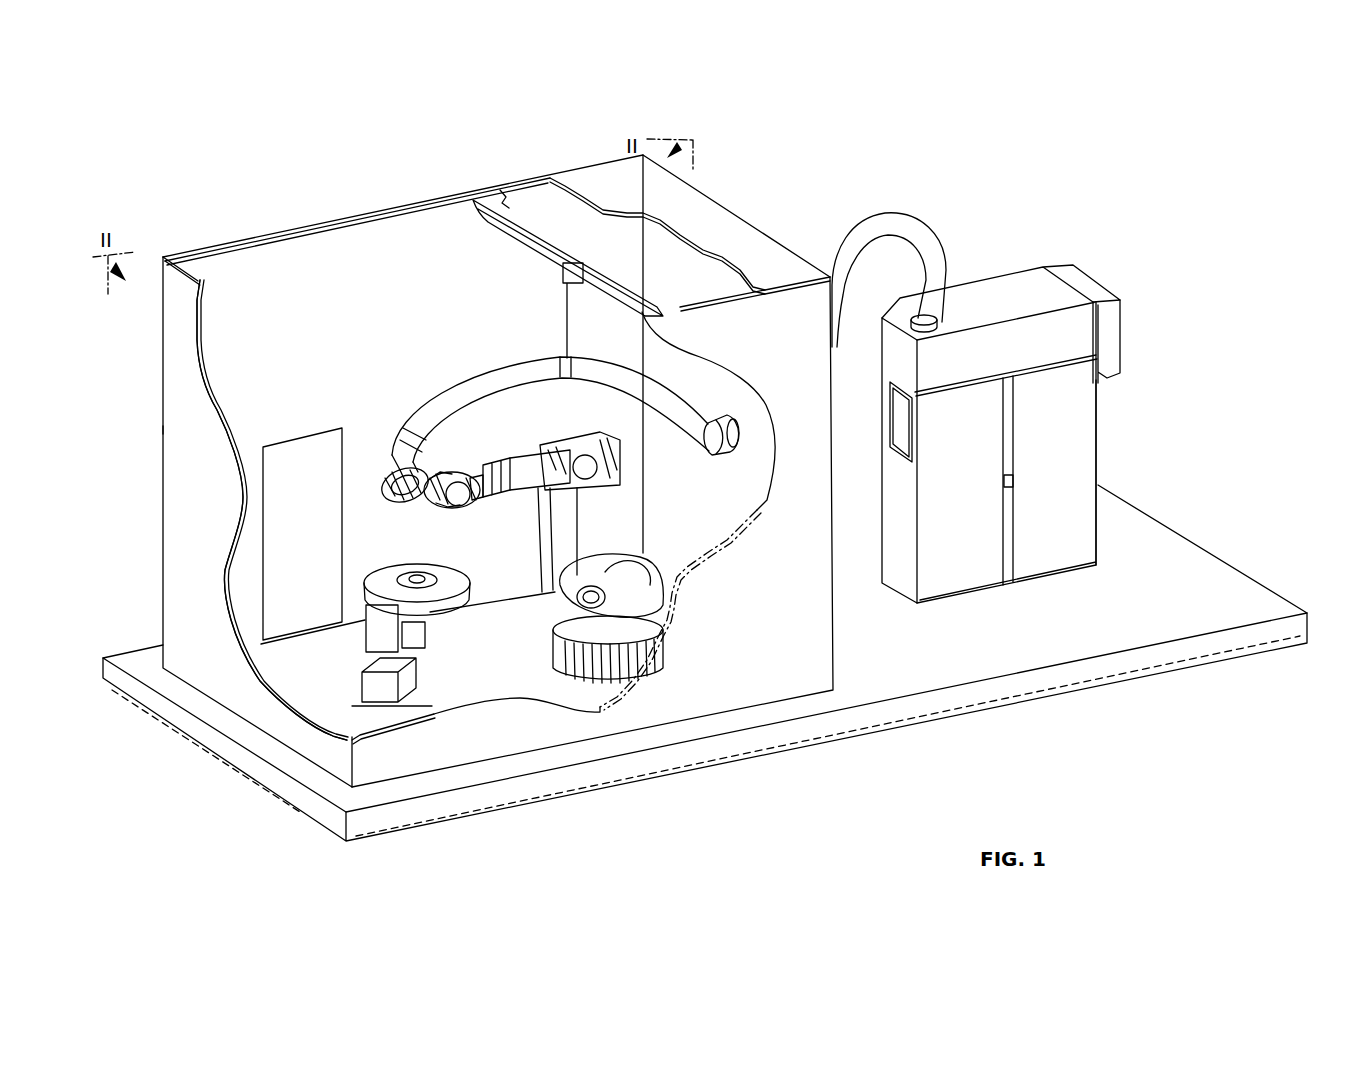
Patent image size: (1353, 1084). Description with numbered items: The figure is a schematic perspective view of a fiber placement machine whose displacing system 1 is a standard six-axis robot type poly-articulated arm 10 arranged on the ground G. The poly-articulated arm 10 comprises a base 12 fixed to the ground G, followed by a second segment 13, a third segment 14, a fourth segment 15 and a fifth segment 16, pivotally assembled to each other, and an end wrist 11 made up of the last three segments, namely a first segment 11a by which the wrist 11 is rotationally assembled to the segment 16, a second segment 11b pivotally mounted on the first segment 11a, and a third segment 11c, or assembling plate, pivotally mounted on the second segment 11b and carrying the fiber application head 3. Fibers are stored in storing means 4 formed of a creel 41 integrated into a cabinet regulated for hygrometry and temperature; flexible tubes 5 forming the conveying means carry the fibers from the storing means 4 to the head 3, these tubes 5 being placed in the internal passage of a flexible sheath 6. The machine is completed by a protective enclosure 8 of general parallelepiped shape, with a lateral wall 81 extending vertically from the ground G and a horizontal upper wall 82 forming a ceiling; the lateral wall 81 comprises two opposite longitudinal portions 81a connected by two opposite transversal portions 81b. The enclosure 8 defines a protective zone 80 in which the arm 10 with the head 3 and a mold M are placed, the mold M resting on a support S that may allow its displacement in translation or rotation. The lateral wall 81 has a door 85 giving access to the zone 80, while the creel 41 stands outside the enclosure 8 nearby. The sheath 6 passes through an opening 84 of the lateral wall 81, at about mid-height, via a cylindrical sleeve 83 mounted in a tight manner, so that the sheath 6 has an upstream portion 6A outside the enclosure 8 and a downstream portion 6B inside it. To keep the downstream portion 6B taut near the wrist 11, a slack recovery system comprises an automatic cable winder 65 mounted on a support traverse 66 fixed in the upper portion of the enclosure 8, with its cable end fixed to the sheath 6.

The displacing system 1 is at (733, 485).
The fiber application head 3 is at (386, 468).
The storing means 4 is at (1021, 434).
The creel 41 is at (1105, 492).
The flexible tubes 5 is at (440, 396).
The flexible sheath 6 is at (669, 314).
The upstream portion 6A is at (888, 215).
The downstream portion 6B is at (522, 362).
The protective enclosure 8 is at (499, 474).
The poly-articulated arm 10 is at (576, 535).
The end wrist 11 is at (477, 495).
The first segment 11a is at (480, 498).
The second segment 11b is at (438, 478).
The third segment 11c is at (433, 514).
The base 12 is at (560, 646).
The second segment 13 is at (614, 576).
The third segment 14 is at (572, 518).
The fourth segment 15 is at (598, 440).
The fifth segment 16 is at (498, 465).
The automatic cable winder 65 is at (567, 265).
The support traverse 66 is at (505, 200).
The protective zone 80 is at (298, 692).
The lateral wall 81 is at (177, 556).
The longitudinal portions 81a is at (803, 610).
The transversal portions 81b is at (180, 429).
The upper wall 82 is at (757, 228).
The cylindrical sleeve 83 is at (727, 442).
The opening 84 is at (722, 418).
The door 85 is at (283, 446).
The ground G is at (1215, 557).
The mold M is at (360, 570).
The support S is at (356, 653).